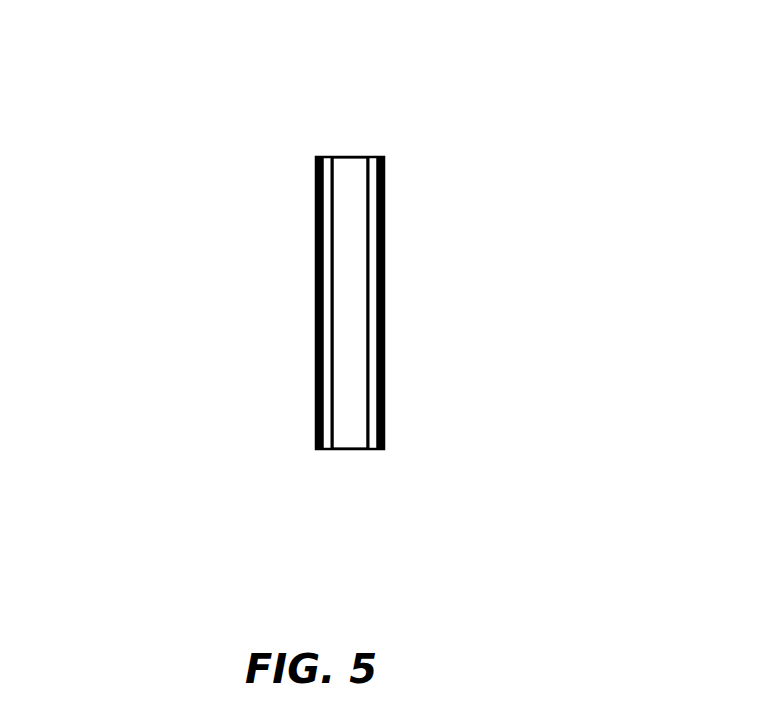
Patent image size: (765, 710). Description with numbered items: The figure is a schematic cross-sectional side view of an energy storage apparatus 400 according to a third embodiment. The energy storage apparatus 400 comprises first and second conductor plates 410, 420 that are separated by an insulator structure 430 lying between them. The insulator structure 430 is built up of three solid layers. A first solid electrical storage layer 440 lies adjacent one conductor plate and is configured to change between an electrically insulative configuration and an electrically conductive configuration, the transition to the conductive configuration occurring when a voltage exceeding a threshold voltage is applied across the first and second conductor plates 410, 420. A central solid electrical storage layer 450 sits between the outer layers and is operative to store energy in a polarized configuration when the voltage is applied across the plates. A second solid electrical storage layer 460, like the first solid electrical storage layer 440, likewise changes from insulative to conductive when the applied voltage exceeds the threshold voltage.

The energy storage apparatus 400 is at (220, 291).
The first conductor plate 410 is at (382, 271).
The second conductor plate 420 is at (323, 294).
The insulator structure 430 is at (318, 106).
The first solid electrical storage layer 440 is at (329, 200).
The central solid electrical storage layer 450 is at (345, 429).
The second solid electrical storage layer 460 is at (373, 221).